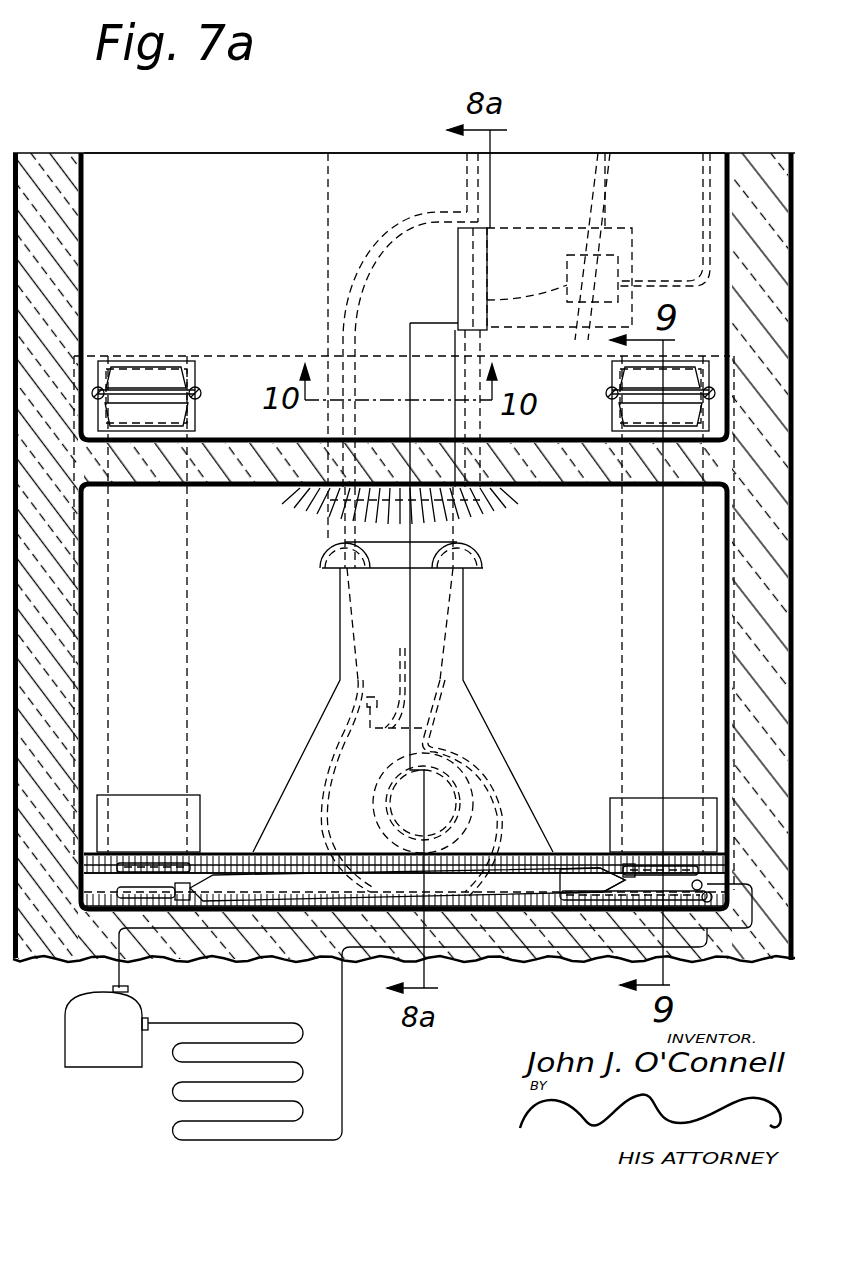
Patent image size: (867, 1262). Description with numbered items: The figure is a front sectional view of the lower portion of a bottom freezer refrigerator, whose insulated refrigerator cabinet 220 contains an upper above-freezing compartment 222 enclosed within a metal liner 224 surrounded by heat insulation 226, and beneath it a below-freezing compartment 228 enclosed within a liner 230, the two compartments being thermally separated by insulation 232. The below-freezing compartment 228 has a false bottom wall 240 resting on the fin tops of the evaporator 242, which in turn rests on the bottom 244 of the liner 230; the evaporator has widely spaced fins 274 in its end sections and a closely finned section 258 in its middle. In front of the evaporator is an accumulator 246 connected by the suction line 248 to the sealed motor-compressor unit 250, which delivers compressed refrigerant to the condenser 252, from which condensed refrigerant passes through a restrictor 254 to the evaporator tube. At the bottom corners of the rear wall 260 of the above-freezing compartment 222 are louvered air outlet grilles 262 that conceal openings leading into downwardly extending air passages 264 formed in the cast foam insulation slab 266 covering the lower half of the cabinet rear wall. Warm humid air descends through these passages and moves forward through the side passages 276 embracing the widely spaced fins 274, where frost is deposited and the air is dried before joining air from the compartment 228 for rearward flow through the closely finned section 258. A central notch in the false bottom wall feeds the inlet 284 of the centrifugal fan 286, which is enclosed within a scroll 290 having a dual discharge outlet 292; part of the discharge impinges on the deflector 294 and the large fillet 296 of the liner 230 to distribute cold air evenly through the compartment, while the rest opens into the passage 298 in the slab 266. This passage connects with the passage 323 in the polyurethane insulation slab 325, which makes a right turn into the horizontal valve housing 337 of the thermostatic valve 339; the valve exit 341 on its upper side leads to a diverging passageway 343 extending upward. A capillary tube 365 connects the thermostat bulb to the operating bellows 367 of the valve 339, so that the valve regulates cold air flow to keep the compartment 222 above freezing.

The insulated refrigerator cabinet 220 is at (530, 962).
The above-freezing compartment 222 is at (402, 267).
The metal liner 224 is at (92, 155).
The heat insulation 226 is at (764, 155).
The below-freezing compartment 228 is at (404, 769).
The liner 230 is at (165, 490).
The insulation 232 is at (522, 486).
The false bottom wall 240 is at (560, 852).
The evaporator 242 is at (245, 852).
The bottom of the liner 244 is at (266, 912).
The accumulator 246 is at (597, 858).
The suction line 248 is at (122, 976).
The sealed motor-compressor unit 250 is at (85, 1052).
The condenser 252 is at (172, 1102).
The restrictor 254 is at (342, 1000).
The closely finned section 258 is at (297, 852).
The rear wall of the above-freezing compartment 260 is at (282, 155).
The louvered air outlet grilles 262 is at (172, 385).
The air passages 264 is at (190, 622).
The cast foam insulation slab 266 is at (110, 735).
The widely spaced fins 274 is at (136, 860).
The side passages 276 is at (705, 882).
The inlet of the centrifugal fan 284 is at (395, 792).
The centrifugal fan 286 is at (482, 772).
The scroll 290 is at (505, 796).
The dual discharge outlet 292 is at (468, 614).
The deflector 294 is at (478, 550).
The fillet 296 is at (352, 506).
The passage 298 is at (370, 705).
The passage 323 is at (352, 337).
The insulation slab 325 is at (327, 253).
The valve housing 337 is at (490, 306).
The thermostatic valve 339 is at (674, 215).
The exit 341 is at (536, 228).
The diverging passageway 343 is at (578, 155).
The capillary tube 365 is at (705, 160).
The operating bellows 367 is at (620, 257).